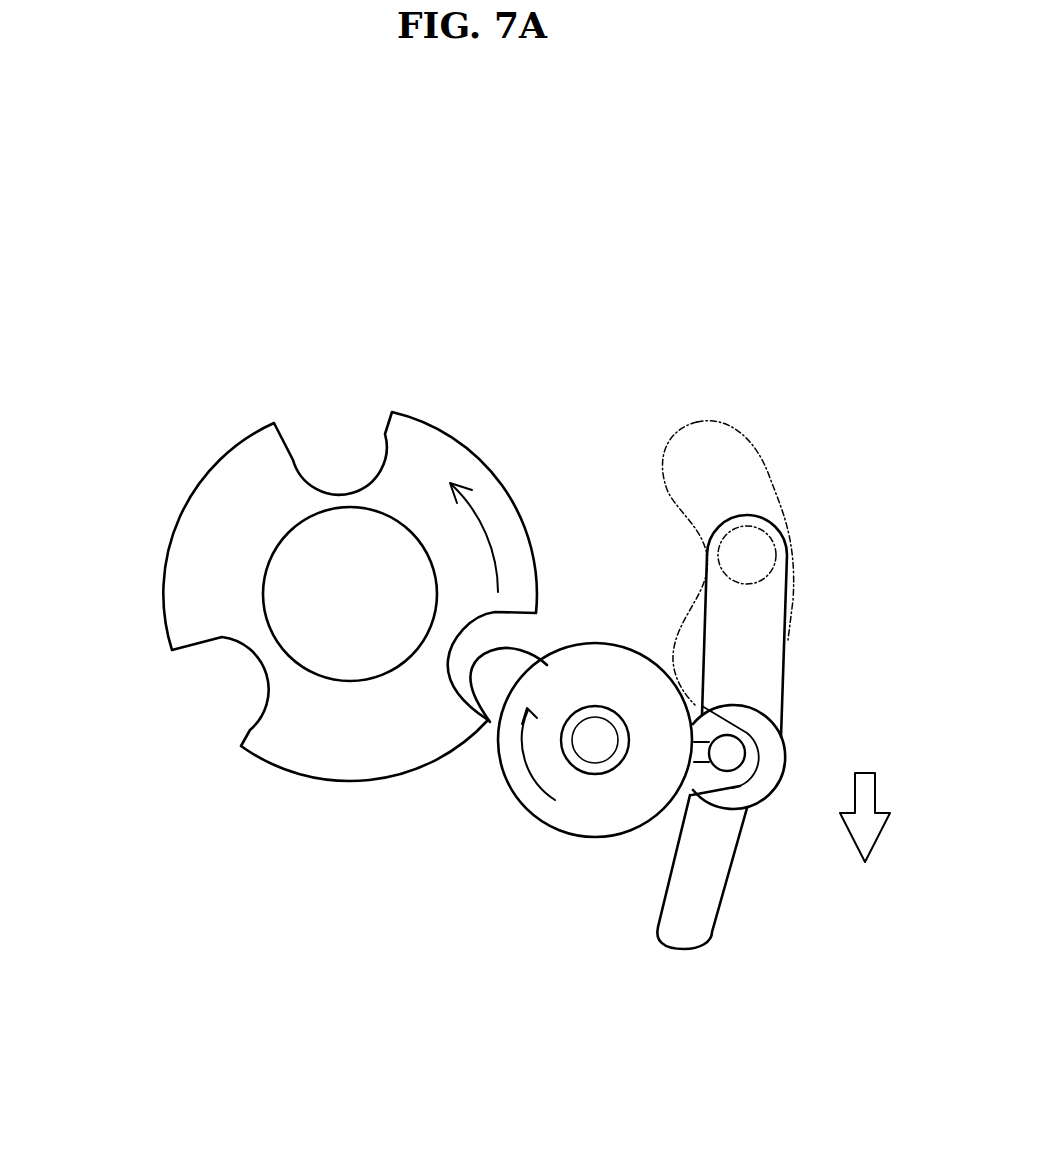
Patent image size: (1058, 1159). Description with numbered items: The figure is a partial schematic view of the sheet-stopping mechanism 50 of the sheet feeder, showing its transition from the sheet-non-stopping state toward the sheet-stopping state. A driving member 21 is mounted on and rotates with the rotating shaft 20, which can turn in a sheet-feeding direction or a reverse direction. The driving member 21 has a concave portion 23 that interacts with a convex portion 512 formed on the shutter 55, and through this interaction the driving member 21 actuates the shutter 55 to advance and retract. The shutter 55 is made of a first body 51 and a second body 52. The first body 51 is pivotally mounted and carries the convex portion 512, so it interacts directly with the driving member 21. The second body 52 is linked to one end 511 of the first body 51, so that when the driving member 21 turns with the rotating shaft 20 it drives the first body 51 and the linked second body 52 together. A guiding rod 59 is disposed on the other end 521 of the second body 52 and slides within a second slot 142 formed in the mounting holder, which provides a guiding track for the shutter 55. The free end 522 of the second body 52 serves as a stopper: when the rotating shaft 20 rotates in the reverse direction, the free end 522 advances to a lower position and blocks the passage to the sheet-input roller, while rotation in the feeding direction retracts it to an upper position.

The rotating shaft 20 is at (342, 645).
The driving member 21 is at (192, 585).
The concave portion 23 is at (485, 632).
The sheet-stopping mechanism 50 is at (483, 155).
The first body 51 is at (550, 744).
The second body 52 is at (660, 744).
The shutter 55 is at (462, 190).
The guiding rod 59 is at (747, 555).
The second slot 142 is at (715, 453).
The one end of the first body 511 is at (737, 787).
The convex portion 512 is at (530, 655).
The other end of the second body 521 is at (743, 620).
The free end 522 is at (677, 930).